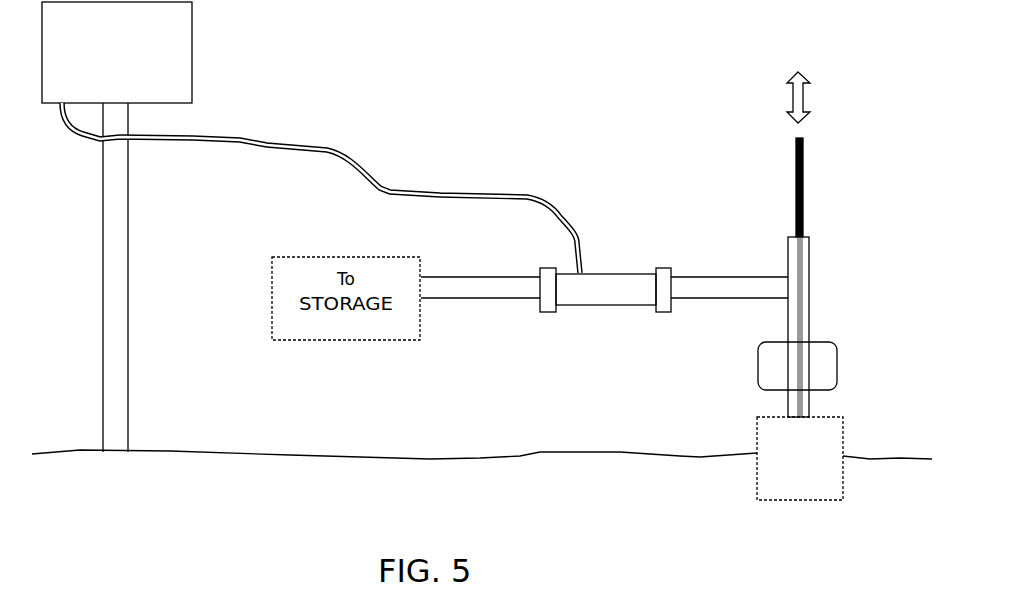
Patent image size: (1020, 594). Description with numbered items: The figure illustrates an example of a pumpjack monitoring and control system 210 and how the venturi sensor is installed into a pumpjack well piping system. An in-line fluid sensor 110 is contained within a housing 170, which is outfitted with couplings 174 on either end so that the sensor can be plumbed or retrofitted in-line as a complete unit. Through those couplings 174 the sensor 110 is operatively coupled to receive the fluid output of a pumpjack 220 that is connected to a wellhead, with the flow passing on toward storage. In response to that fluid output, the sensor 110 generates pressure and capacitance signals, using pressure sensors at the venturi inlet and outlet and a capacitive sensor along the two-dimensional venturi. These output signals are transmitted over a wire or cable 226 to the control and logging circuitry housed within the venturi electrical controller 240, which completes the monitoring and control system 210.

The venturi electrical controller 240 is at (117, 52).
The wire or cable 226 is at (267, 145).
The pumpjack monitoring and control system 210 is at (686, 88).
The housing 170 is at (587, 277).
The couplings 174 is at (547, 296).
The fluid sensor 110 is at (600, 293).
The pumpjack 220 is at (849, 19).